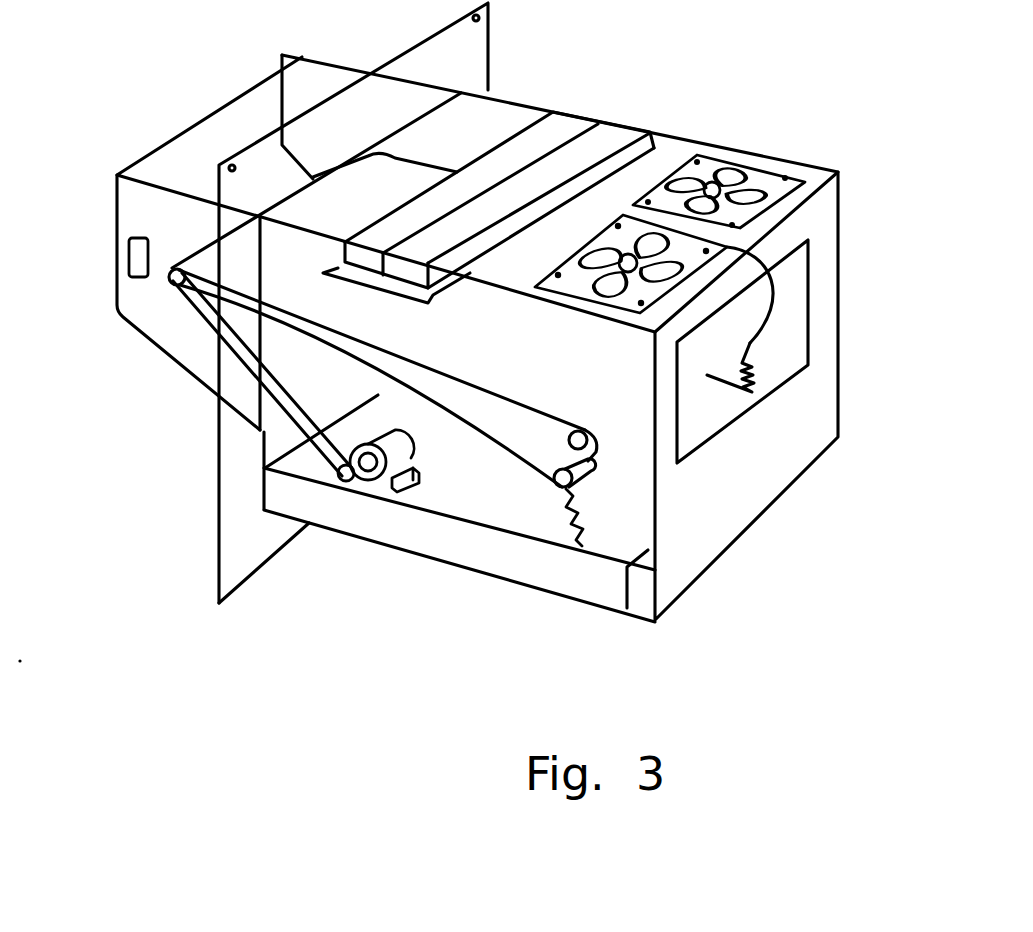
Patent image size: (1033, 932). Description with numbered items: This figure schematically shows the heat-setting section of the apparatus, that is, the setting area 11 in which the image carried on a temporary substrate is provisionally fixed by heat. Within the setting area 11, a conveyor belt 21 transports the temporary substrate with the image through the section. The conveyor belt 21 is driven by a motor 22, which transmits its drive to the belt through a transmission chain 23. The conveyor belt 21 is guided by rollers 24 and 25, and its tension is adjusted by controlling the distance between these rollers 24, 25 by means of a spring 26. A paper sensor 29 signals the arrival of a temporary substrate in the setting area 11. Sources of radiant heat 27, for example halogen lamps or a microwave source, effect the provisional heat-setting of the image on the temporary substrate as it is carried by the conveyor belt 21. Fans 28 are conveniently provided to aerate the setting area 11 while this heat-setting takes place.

The setting area 11 is at (693, 105).
The conveyor belt 21 is at (540, 380).
The motor 22 is at (372, 466).
The transmission chain 23 is at (272, 382).
The roller 24 is at (560, 487).
The roller 25 is at (587, 455).
The spring 26 is at (590, 490).
The sources of radiant heat 27 is at (573, 150).
The fans 28 is at (733, 175).
The paper sensor 29 is at (135, 260).